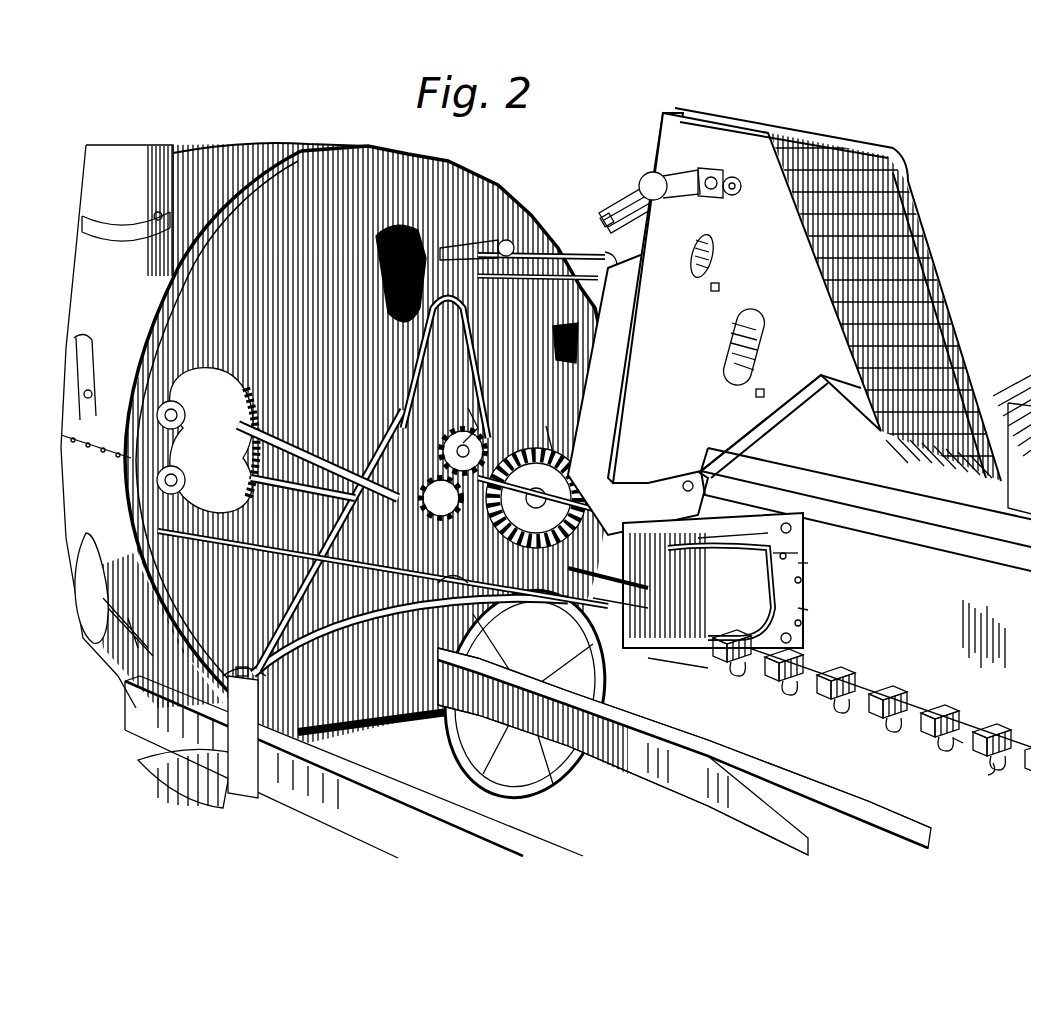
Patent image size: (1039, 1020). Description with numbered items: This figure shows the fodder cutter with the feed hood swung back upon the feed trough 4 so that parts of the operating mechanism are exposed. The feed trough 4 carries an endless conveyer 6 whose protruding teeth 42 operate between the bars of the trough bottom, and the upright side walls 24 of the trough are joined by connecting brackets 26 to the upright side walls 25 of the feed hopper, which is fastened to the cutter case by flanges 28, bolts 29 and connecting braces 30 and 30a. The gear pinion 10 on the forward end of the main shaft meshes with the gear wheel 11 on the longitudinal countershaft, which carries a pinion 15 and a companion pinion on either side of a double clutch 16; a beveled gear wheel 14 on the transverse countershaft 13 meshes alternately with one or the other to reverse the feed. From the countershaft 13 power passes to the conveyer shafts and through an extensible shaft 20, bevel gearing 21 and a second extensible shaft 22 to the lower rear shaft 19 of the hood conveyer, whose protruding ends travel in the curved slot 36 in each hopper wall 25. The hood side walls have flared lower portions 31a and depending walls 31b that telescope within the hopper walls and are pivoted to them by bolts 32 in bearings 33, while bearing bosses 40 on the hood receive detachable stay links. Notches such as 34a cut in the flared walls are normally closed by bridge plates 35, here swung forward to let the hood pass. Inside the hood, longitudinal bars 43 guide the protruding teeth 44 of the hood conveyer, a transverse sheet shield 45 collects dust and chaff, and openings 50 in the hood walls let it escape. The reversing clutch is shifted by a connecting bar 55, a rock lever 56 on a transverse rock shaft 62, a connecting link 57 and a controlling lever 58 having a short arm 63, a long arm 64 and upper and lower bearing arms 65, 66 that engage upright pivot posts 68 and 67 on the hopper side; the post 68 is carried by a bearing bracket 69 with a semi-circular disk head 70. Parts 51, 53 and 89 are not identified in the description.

The feed trough 4 is at (956, 743).
The endless conveyer 6 is at (980, 757).
The gear pinion 10 is at (478, 432).
The gear wheel 11 is at (471, 474).
The transverse countershaft 13 is at (543, 471).
The beveled gear wheel 14 is at (546, 495).
The pinion 15 is at (638, 391).
The double clutch 16 is at (565, 432).
The lower rear shaft of feed hood conveyer 19 is at (694, 162).
The extensible shaft 20 is at (315, 505).
The bevel gearing 21 is at (217, 440).
The extensible shaft 22 is at (318, 368).
The upright side walls of feed trough 24 is at (908, 680).
The upright side walls of feed hopper 25 is at (497, 408).
The connecting brackets 26 is at (713, 580).
The flanges 28 is at (402, 560).
The bolts 29 is at (455, 590).
The connecting brace 30 is at (330, 548).
The connecting brace 30a is at (470, 612).
The flared lower portions of hood side walls 31a is at (645, 298).
The depending walls 31b is at (643, 401).
The pivot bolts 32 is at (641, 375).
The bearings 33 is at (658, 448).
The notch 34a is at (673, 478).
The bridge plates 35 is at (998, 385).
The curved slot 36 is at (445, 368).
The bearing bosses 40 is at (728, 170).
The protruding teeth of trough conveyer 42 is at (865, 700).
The longitudinal bars 43 is at (1019, 458).
The protruding teeth of hood conveyer 44 is at (900, 290).
The transverse sheet shield 45 is at (706, 256).
The openings 50 is at (756, 345).
The hopper panel 51 is at (778, 278).
The handle 53 is at (652, 152).
The connecting bar 55 is at (525, 694).
The rock lever 56 is at (585, 590).
The connecting link 57 is at (470, 240).
The controlling lever 58 is at (480, 232).
The transverse rock shaft 62 is at (621, 630).
The short arm 63 is at (697, 675).
The long arm 64 is at (760, 535).
The upper bearing arm 65 is at (792, 548).
The lower bearing arm 66 is at (795, 618).
The upright pivot post 67 is at (802, 604).
The upright pivot post 68 is at (815, 548).
The bearing bracket 69 is at (802, 562).
The semi-circular disk head 70 is at (823, 566).
The square shaft 89 is at (520, 232).